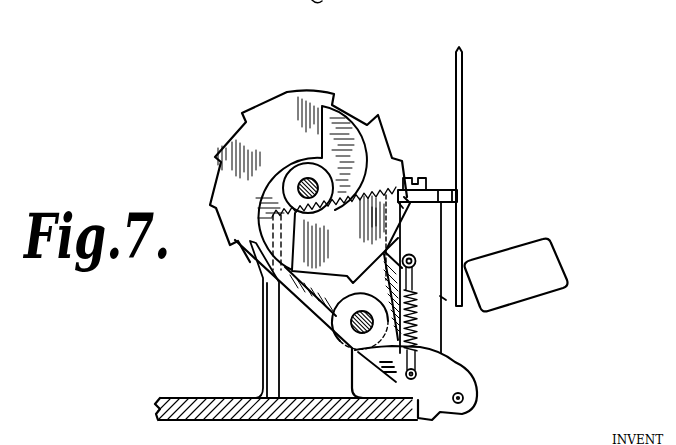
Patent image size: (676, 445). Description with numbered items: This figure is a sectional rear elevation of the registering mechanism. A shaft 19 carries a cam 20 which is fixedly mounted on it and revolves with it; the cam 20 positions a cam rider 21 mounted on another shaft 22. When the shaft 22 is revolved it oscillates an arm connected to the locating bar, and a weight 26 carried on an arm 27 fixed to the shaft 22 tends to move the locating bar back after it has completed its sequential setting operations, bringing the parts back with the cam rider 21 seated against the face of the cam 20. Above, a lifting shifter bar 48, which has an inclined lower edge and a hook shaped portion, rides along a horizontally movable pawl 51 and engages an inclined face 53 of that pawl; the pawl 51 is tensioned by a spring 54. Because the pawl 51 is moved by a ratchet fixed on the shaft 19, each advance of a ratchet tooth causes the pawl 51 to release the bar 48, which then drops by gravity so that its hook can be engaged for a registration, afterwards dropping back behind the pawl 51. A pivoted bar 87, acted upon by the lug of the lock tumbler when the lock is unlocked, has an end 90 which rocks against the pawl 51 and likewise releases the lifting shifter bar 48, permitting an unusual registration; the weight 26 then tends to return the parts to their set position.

The shaft 19 is at (306, 178).
The cam 20 is at (335, 128).
The cam rider 21 is at (312, 305).
The shaft 22 is at (356, 333).
The weight 26 is at (525, 262).
The arm 27 is at (444, 298).
The lifting shifter bar 48 is at (465, 113).
The pawl 51 is at (444, 180).
The inclined face 53 is at (460, 197).
The spring 54 is at (348, 216).
The bar 87 is at (463, 398).
The end 90 is at (407, 233).